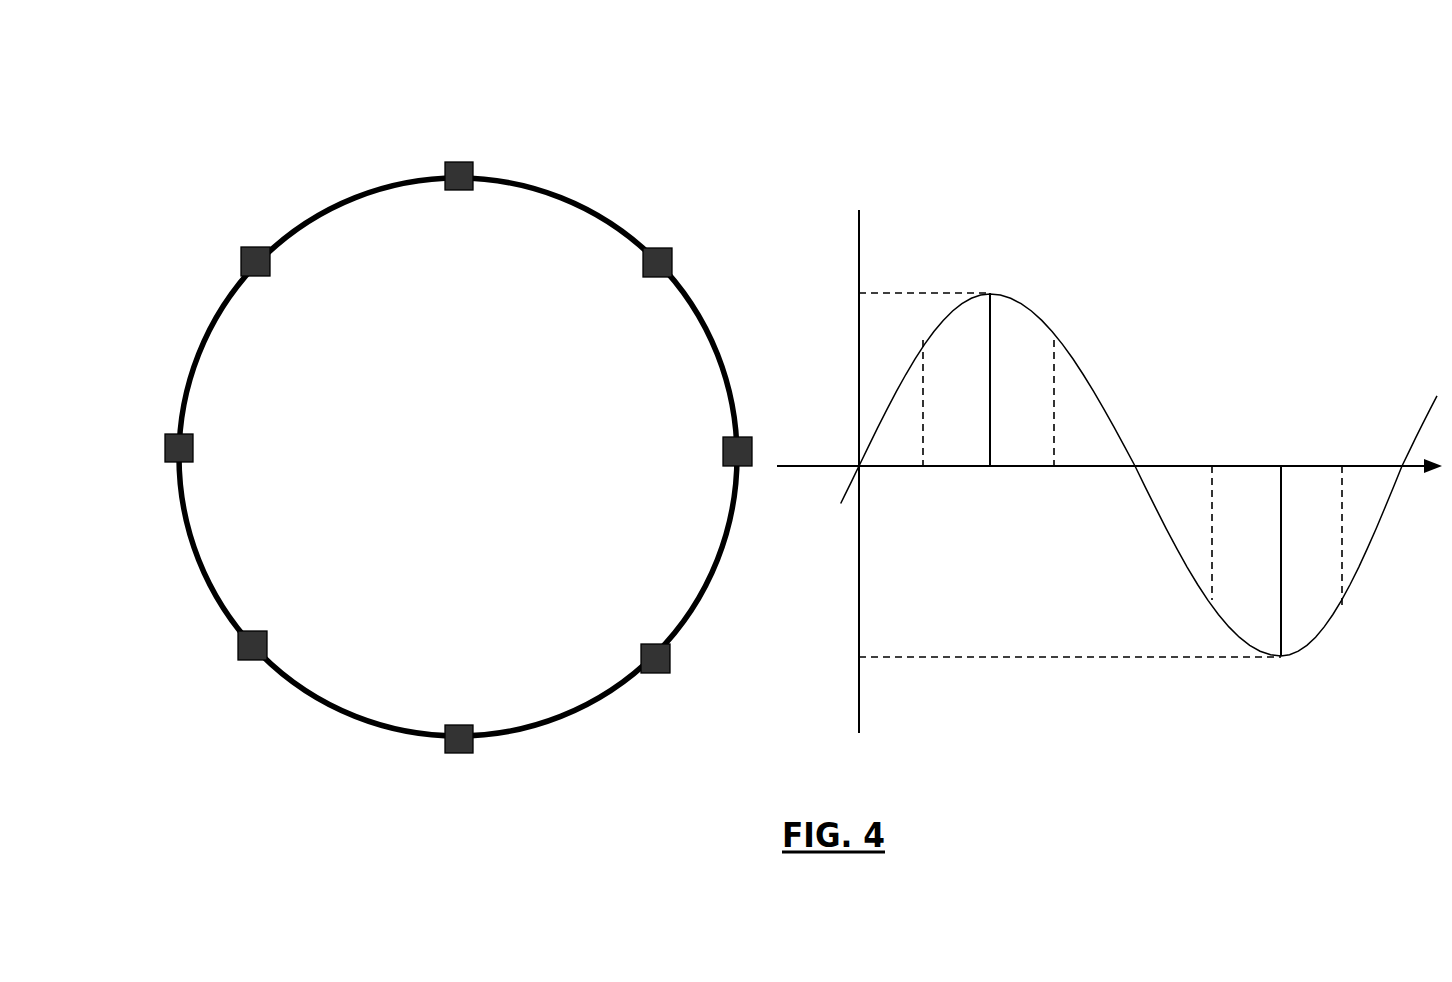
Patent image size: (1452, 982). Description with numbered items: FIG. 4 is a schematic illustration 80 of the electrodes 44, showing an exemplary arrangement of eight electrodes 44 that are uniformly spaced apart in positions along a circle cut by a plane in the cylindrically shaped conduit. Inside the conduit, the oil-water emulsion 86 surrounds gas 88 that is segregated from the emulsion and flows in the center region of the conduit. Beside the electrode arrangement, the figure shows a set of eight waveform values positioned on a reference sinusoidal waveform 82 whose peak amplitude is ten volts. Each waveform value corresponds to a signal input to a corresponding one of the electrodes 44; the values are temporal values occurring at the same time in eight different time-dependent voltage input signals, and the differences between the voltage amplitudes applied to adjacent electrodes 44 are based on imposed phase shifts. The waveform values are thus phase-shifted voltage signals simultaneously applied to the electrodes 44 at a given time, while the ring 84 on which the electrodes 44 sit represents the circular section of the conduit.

The schematic illustration 80 is at (367, 81).
The voltage waveform graph 82 is at (1451, 125).
The circular ring 84 is at (322, 197).
The oil-water emulsion 86 is at (506, 244).
The gas 88 is at (449, 447).
The electrodes 44 is at (476, 467).